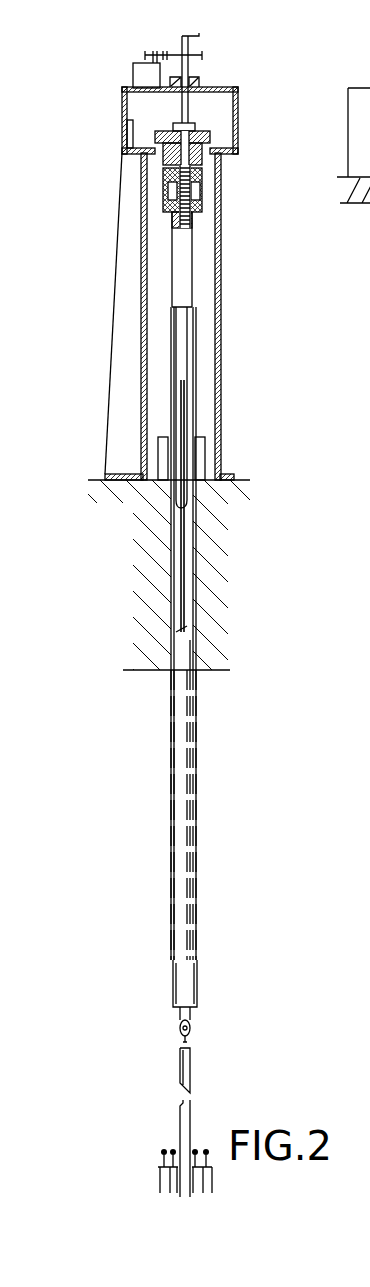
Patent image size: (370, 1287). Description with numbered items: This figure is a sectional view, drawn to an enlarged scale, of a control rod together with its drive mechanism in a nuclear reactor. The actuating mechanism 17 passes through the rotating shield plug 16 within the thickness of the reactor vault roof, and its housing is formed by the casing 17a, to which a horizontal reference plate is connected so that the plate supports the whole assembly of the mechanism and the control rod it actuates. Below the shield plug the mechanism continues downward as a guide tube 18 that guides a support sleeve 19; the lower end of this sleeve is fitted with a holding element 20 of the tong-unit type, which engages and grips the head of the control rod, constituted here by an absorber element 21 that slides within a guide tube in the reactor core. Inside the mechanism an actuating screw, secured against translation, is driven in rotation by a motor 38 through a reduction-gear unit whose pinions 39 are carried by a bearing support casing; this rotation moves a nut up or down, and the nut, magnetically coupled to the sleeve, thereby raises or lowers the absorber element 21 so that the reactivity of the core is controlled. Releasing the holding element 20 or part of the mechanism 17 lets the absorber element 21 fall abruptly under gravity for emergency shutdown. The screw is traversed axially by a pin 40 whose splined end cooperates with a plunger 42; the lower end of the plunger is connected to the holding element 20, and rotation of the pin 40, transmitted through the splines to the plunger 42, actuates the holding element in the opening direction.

The rotating shield plug 16 is at (240, 488).
The actuating mechanism 17 is at (200, 263).
The casing 17a is at (221, 309).
The guide tube 18 is at (198, 592).
The support sleeve 19 is at (198, 726).
The holding element 20 is at (193, 1035).
The absorber element 21 is at (188, 1068).
The motor 38 is at (142, 73).
The pinions 39 is at (143, 55).
The pin 40 is at (184, 352).
The plunger 42 is at (193, 1022).